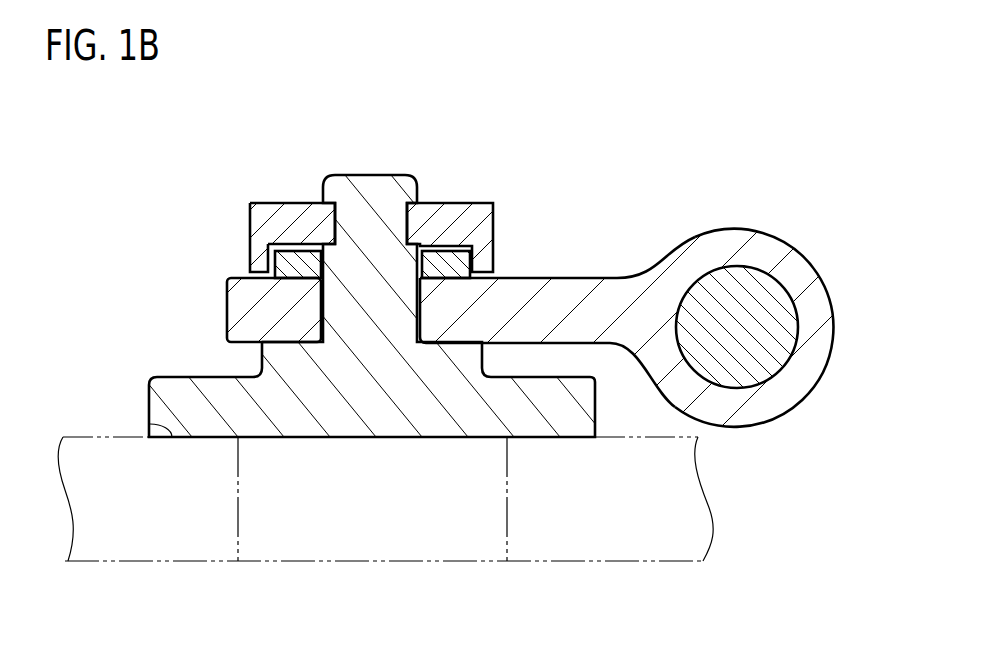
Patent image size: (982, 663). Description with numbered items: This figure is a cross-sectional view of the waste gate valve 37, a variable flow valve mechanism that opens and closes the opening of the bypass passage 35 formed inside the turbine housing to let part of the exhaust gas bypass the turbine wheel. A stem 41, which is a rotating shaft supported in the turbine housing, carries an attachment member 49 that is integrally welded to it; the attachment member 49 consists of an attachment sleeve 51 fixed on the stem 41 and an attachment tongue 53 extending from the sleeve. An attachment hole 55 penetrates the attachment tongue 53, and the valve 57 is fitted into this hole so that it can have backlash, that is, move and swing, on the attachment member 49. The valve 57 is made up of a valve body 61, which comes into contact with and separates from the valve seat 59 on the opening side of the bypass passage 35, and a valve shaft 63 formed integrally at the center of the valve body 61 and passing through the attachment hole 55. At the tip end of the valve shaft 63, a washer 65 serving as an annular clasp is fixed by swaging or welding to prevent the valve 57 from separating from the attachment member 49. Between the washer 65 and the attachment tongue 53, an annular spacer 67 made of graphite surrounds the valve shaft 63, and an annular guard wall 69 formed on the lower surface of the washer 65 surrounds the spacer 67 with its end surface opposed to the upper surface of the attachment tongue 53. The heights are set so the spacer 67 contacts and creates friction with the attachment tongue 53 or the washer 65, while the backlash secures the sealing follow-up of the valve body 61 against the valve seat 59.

The bypass passage 35 is at (508, 533).
The waste gate valve 37 is at (501, 120).
The stem 41 is at (752, 372).
The attachment member 49 is at (572, 148).
The attachment sleeve 51 is at (733, 326).
The attachment tongue 53 is at (578, 278).
The attachment hole 55 is at (424, 305).
The valve 57 is at (137, 287).
The valve seat 59 is at (150, 425).
The valve body 61 is at (218, 377).
The valve shaft 63 is at (328, 307).
The washer 65 is at (293, 203).
The spacer 67 is at (445, 255).
The guard wall 69 is at (250, 258).